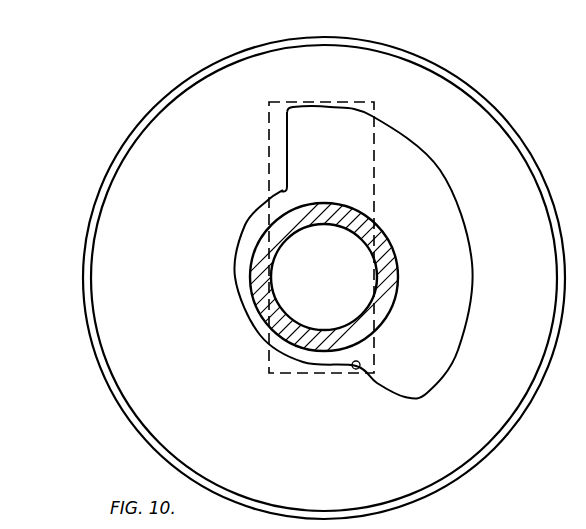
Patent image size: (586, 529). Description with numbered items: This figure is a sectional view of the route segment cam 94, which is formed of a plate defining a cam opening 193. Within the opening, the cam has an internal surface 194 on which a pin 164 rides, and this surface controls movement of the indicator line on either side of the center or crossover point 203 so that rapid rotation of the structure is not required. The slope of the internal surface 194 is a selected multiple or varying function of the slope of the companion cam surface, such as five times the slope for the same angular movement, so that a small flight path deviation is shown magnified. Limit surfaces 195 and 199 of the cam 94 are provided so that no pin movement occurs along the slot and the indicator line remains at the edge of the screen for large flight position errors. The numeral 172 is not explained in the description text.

The housing disc 94 is at (502, 149).
The bearing ring 193 is at (255, 218).
The cam inner surface 195 is at (241, 305).
The cam 199 is at (470, 226).
The cam lobe 194 is at (407, 393).
The cam edge 203 is at (447, 380).
The pin 164 is at (355, 370).
The shaft 172 is at (537, 520).